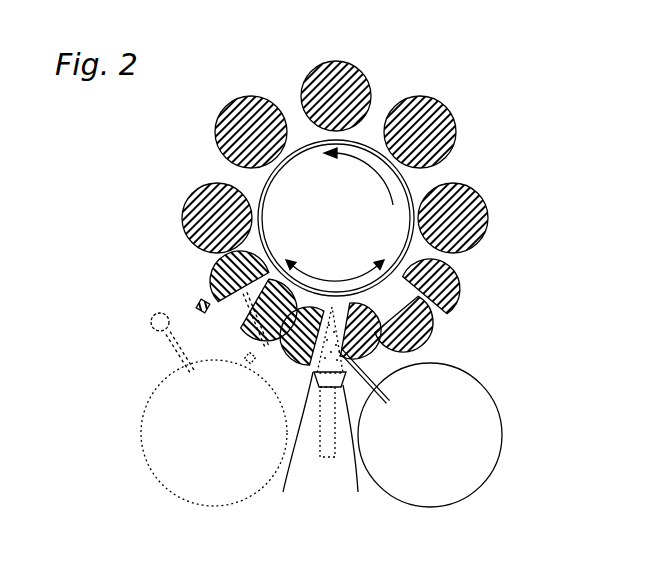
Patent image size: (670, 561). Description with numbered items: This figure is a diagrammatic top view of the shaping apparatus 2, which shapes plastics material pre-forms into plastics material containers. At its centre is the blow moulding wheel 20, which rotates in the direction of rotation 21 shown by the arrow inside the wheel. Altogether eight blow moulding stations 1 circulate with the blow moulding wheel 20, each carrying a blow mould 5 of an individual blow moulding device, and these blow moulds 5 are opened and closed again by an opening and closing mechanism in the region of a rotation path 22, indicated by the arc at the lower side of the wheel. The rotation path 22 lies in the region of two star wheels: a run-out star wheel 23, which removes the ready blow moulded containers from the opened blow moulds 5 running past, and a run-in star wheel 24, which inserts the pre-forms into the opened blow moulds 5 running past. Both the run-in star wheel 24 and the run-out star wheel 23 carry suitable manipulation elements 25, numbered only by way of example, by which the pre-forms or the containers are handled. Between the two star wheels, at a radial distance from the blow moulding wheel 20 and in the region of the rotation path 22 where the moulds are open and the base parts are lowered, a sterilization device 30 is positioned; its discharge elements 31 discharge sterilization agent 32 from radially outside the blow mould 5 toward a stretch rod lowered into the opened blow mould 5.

The blow moulding station 1 is at (444, 88).
The shaping apparatus 2 is at (566, 80).
The blow mould 5 is at (490, 222).
The blow moulding wheel 20 is at (351, 233).
The direction of rotation 21 is at (359, 197).
The rotation path 22 is at (349, 275).
The run-out star wheel 23 is at (141, 418).
The run-in star wheel 24 is at (502, 435).
The manipulation element 25 is at (156, 334).
The sterilization device 30 is at (327, 457).
The discharge element 31 is at (358, 492).
The sterilization agent 32 is at (283, 492).